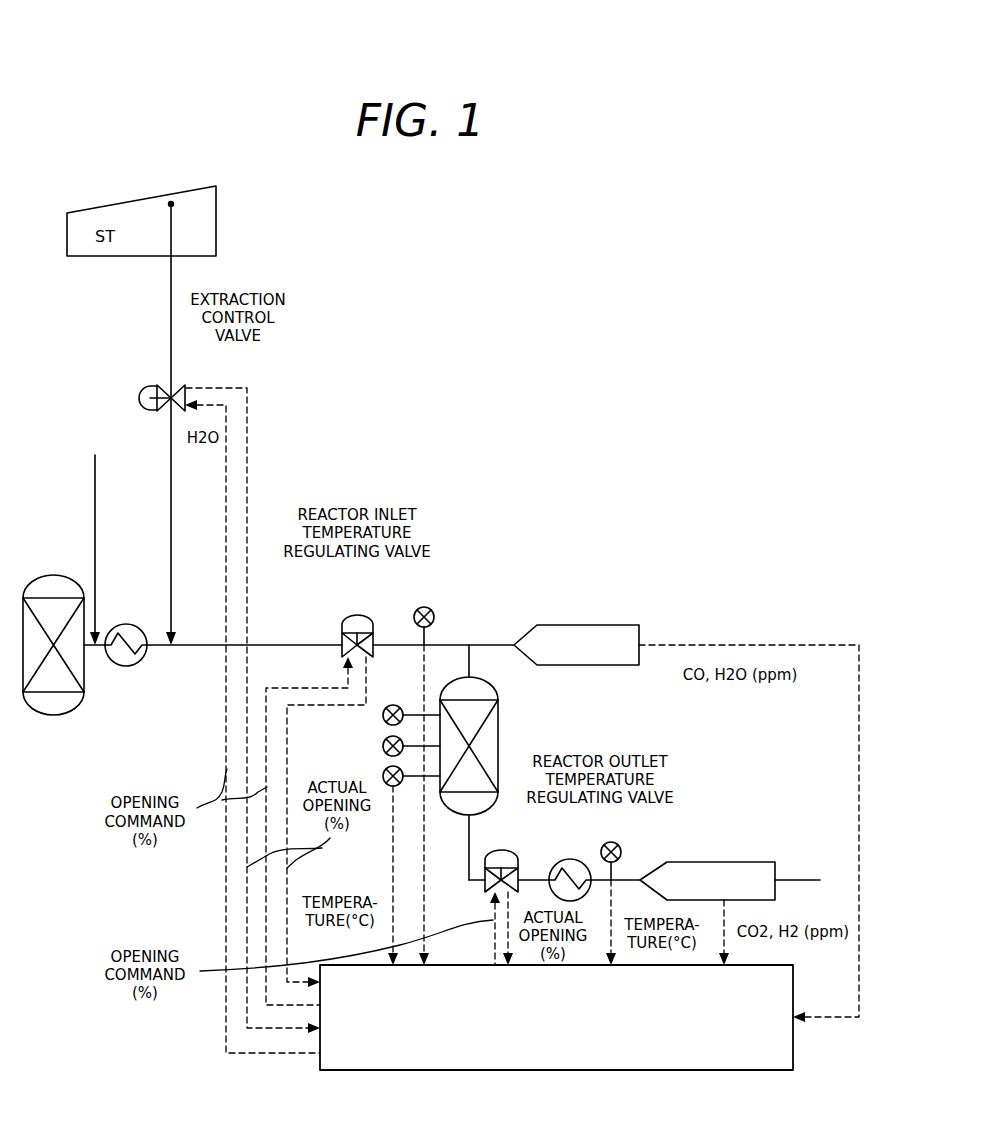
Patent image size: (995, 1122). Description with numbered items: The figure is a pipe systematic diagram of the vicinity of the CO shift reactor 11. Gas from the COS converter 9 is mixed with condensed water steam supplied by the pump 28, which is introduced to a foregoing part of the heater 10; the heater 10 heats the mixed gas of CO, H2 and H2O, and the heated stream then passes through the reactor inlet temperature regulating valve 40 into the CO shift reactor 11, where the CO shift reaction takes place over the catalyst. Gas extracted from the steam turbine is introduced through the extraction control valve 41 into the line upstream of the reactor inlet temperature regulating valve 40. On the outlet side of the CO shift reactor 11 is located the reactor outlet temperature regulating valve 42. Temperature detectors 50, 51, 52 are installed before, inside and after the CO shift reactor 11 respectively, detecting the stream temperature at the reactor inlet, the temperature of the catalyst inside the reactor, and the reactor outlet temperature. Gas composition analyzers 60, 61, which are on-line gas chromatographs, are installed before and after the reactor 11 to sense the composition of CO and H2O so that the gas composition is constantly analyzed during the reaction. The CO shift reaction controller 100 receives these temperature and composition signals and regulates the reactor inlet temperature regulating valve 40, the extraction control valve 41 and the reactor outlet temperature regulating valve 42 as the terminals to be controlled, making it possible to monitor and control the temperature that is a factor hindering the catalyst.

The COS converter 9 is at (52, 576).
The heater 10 is at (126, 666).
The CO shift reactor 11 is at (498, 728).
The pump 28 is at (93, 525).
The reactor inlet temperature regulating valve 40 is at (357, 615).
The extraction control valve 41 is at (184, 392).
The reactor outlet temperature regulating valve 42 is at (510, 854).
The temperature detector 50 is at (435, 610).
The temperature detector 51 is at (383, 746).
The temperature detector 52 is at (621, 845).
The gas composition analyzer 60 is at (597, 622).
The gas composition analyzer 61 is at (718, 860).
The CO shift reaction controller 100 is at (795, 1040).